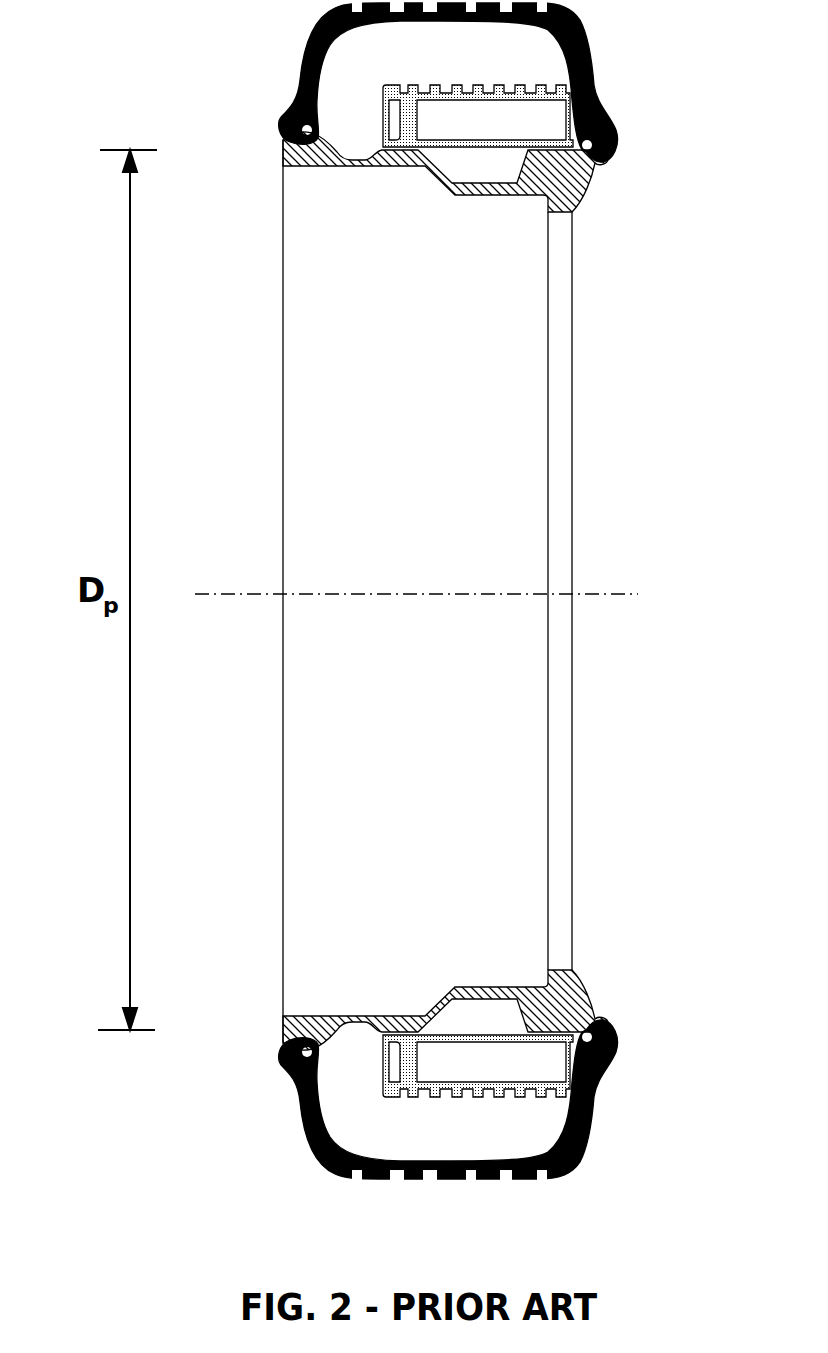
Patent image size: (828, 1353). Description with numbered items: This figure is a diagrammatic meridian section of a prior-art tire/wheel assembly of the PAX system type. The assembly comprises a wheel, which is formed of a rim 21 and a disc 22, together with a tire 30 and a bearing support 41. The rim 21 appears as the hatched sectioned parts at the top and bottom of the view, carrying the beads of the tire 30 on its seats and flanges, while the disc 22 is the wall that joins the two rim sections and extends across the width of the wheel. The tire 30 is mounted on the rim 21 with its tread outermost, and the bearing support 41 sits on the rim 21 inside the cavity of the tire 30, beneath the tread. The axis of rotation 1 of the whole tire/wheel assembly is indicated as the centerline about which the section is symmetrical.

The axis of rotation 1 is at (612, 596).
The rim 21 is at (563, 180).
The disc 22 is at (558, 393).
The tire 30 is at (578, 30).
The bearing support 41 is at (480, 92).